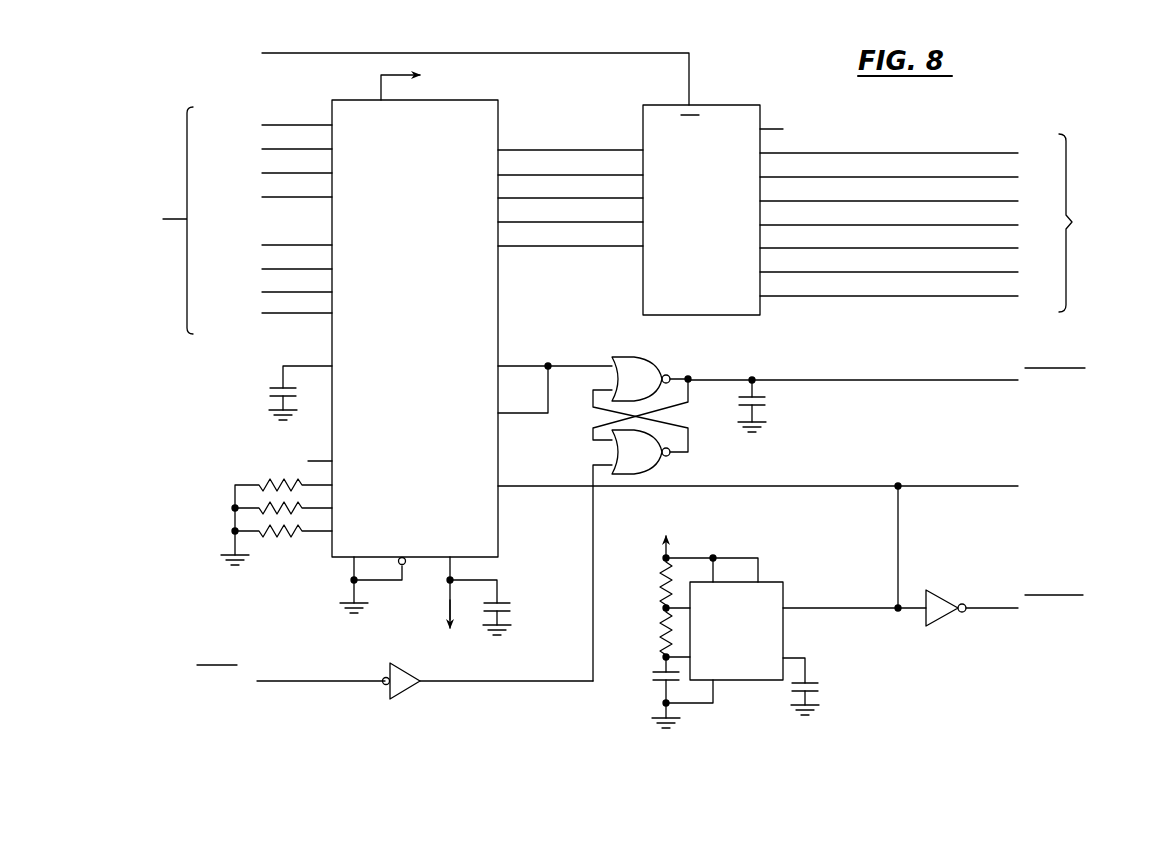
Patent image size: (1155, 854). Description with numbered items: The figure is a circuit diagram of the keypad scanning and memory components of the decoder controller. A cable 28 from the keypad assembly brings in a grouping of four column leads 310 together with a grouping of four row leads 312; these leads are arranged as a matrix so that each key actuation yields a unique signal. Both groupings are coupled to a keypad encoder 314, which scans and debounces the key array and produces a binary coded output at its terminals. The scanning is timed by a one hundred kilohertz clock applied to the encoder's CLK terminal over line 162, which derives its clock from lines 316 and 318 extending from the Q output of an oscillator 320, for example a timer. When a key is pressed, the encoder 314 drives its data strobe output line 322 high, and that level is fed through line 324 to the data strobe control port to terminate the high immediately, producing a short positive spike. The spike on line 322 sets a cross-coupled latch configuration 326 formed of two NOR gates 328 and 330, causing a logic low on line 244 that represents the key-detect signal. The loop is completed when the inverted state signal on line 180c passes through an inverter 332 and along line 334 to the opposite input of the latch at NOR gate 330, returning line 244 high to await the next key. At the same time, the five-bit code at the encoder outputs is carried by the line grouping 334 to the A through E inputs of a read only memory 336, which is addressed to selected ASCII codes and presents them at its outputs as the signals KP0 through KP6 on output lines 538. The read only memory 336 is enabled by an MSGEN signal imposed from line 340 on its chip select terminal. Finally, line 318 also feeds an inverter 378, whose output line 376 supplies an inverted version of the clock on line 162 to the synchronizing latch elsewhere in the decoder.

The cable 28 is at (176, 219).
The column leads 310 is at (291, 322).
The row leads 312 is at (298, 113).
The keypad encoder 314 is at (488, 100).
The line 316 is at (898, 541).
The line 318 is at (826, 608).
The oscillator 320 is at (780, 582).
The data strobe output line 322 is at (570, 366).
The line 324 is at (528, 416).
The cross-coupled latch configuration 326 is at (782, 343).
The NOR gate 328 is at (651, 362).
The NOR gate 330 is at (658, 467).
The inverter 332 is at (413, 693).
The line 334 is at (560, 140).
The read only memory 336 is at (740, 105).
The keypad output lines 538 is at (888, 150).
The line 340 is at (598, 48).
The line 162 is at (797, 486).
The line 244 is at (830, 380).
The line 180c is at (304, 681).
The line 376 is at (990, 611).
The inverter 378 is at (948, 598).